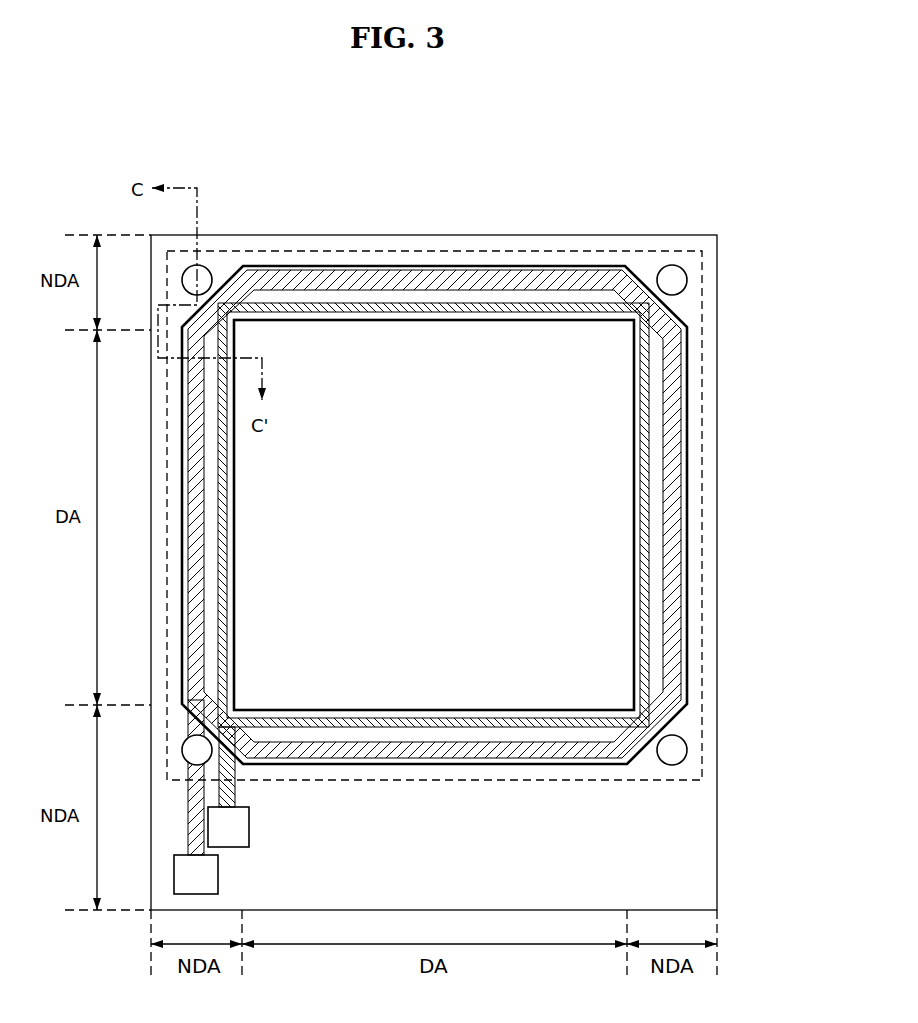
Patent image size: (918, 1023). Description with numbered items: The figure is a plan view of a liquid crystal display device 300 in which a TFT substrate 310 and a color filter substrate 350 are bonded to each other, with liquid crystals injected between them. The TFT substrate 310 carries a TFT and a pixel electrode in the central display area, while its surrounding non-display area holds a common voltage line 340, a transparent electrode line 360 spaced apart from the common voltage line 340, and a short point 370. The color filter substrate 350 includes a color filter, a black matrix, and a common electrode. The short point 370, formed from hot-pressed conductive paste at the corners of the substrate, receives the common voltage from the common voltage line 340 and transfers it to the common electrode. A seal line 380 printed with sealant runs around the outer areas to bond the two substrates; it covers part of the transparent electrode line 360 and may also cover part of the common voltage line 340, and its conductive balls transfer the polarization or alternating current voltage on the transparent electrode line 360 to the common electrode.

The liquid crystal display device 300 is at (567, 181).
The TFT substrate 310 is at (434, 234).
The common voltage line 340 is at (673, 503).
The color filter substrate 350 is at (703, 335).
The transparent electrode line 360 is at (648, 563).
The short point 370 is at (673, 240).
The seal line 380 is at (688, 432).